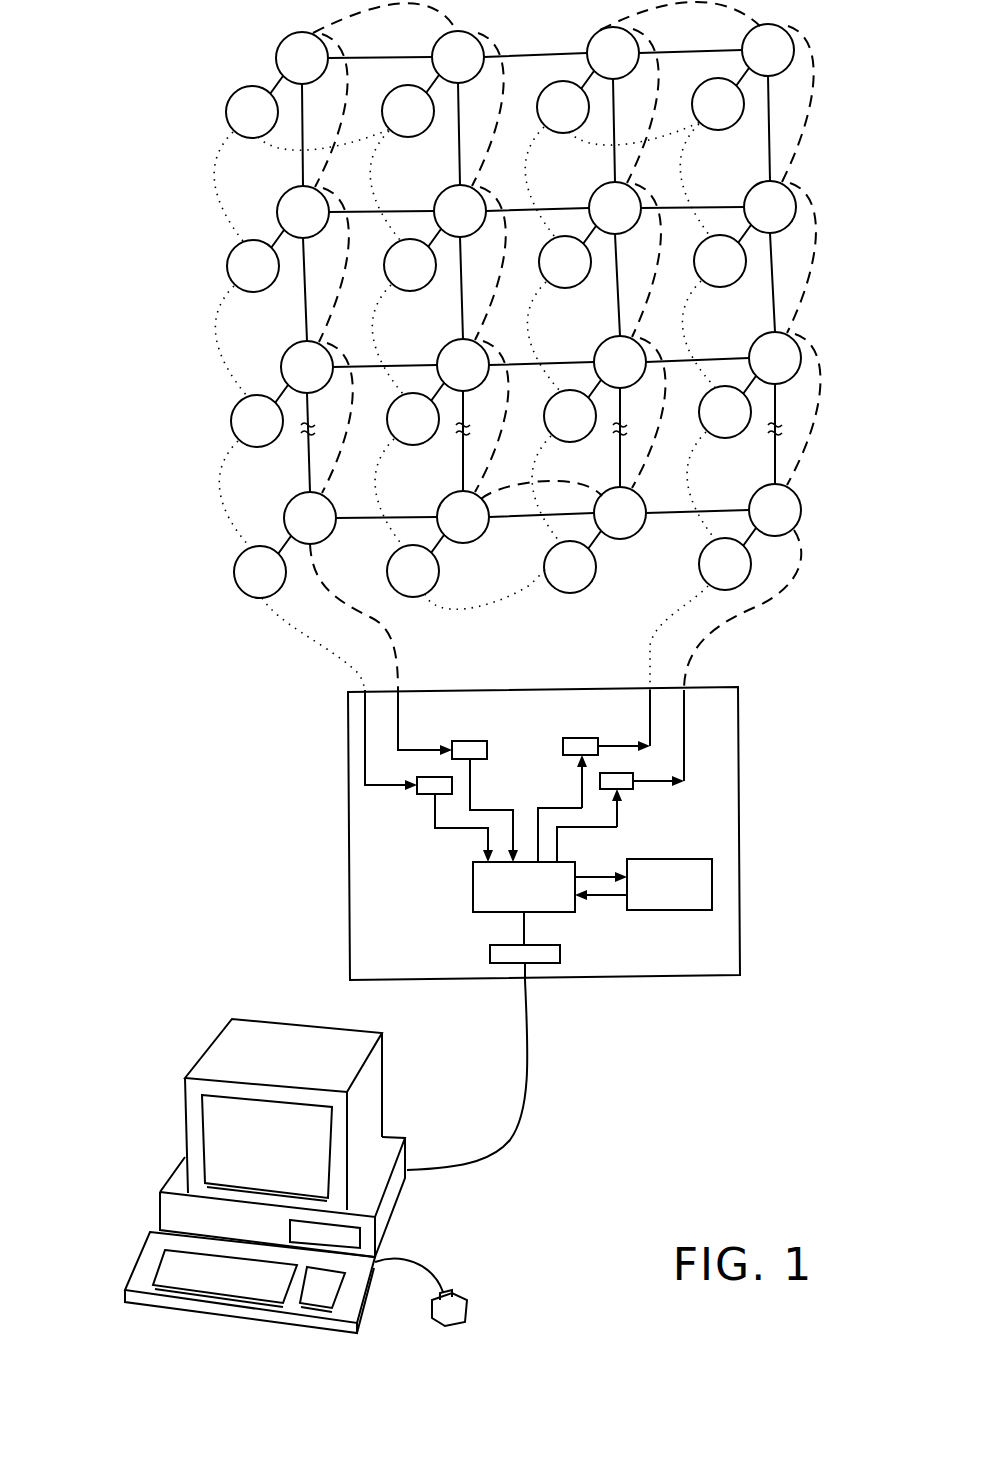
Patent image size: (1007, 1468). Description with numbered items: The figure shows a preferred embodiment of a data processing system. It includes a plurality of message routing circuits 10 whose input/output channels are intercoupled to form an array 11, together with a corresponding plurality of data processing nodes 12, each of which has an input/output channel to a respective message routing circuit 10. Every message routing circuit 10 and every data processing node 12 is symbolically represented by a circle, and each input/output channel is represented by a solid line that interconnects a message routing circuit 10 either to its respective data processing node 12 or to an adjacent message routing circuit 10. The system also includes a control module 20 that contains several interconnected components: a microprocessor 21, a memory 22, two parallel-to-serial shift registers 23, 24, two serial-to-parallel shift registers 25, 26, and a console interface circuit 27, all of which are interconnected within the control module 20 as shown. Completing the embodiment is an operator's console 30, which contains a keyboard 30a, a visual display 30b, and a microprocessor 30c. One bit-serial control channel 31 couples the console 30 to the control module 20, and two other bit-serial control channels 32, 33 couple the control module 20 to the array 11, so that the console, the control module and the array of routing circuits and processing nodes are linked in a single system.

The message routing circuit 10 is at (538, 284).
The array 11 is at (196, 251).
The data processing node 12 is at (488, 338).
The control module 20 is at (348, 811).
The microprocessor 21 is at (473, 880).
The memory 22 is at (655, 910).
The parallel-to-serial shift register 23 is at (633, 790).
The parallel-to-serial shift register 24 is at (575, 738).
The serial-to-parallel shift register 25 is at (425, 795).
The serial-to-parallel shift register 26 is at (480, 741).
The console interface circuit 27 is at (490, 955).
The operator's console 30 is at (286, 1167).
The keyboard 30a is at (142, 1247).
The visual display 30b is at (380, 1068).
The microprocessor 30c is at (395, 1215).
The bit-serial control channel 31 is at (523, 1105).
The bit-serial control channel 32 is at (390, 639).
The bit-serial control channel 33 is at (327, 645).